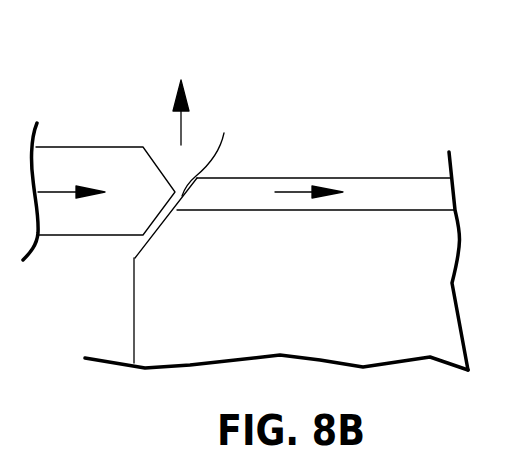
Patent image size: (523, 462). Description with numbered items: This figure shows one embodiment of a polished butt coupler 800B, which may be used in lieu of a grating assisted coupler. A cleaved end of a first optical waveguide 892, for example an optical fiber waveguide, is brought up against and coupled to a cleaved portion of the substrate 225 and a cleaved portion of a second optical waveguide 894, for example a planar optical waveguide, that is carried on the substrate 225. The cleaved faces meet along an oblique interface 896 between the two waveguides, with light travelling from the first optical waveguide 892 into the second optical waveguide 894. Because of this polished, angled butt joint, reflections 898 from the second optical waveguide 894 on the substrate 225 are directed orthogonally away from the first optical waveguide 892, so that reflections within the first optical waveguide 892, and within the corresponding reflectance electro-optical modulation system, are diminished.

The polished butt coupler 800B is at (313, 36).
The substrate 225 is at (315, 291).
The first optical waveguide 892 is at (110, 147).
The second optical waveguide 894 is at (380, 190).
The deflector flap 896 is at (210, 153).
The reflections 898 is at (177, 118).